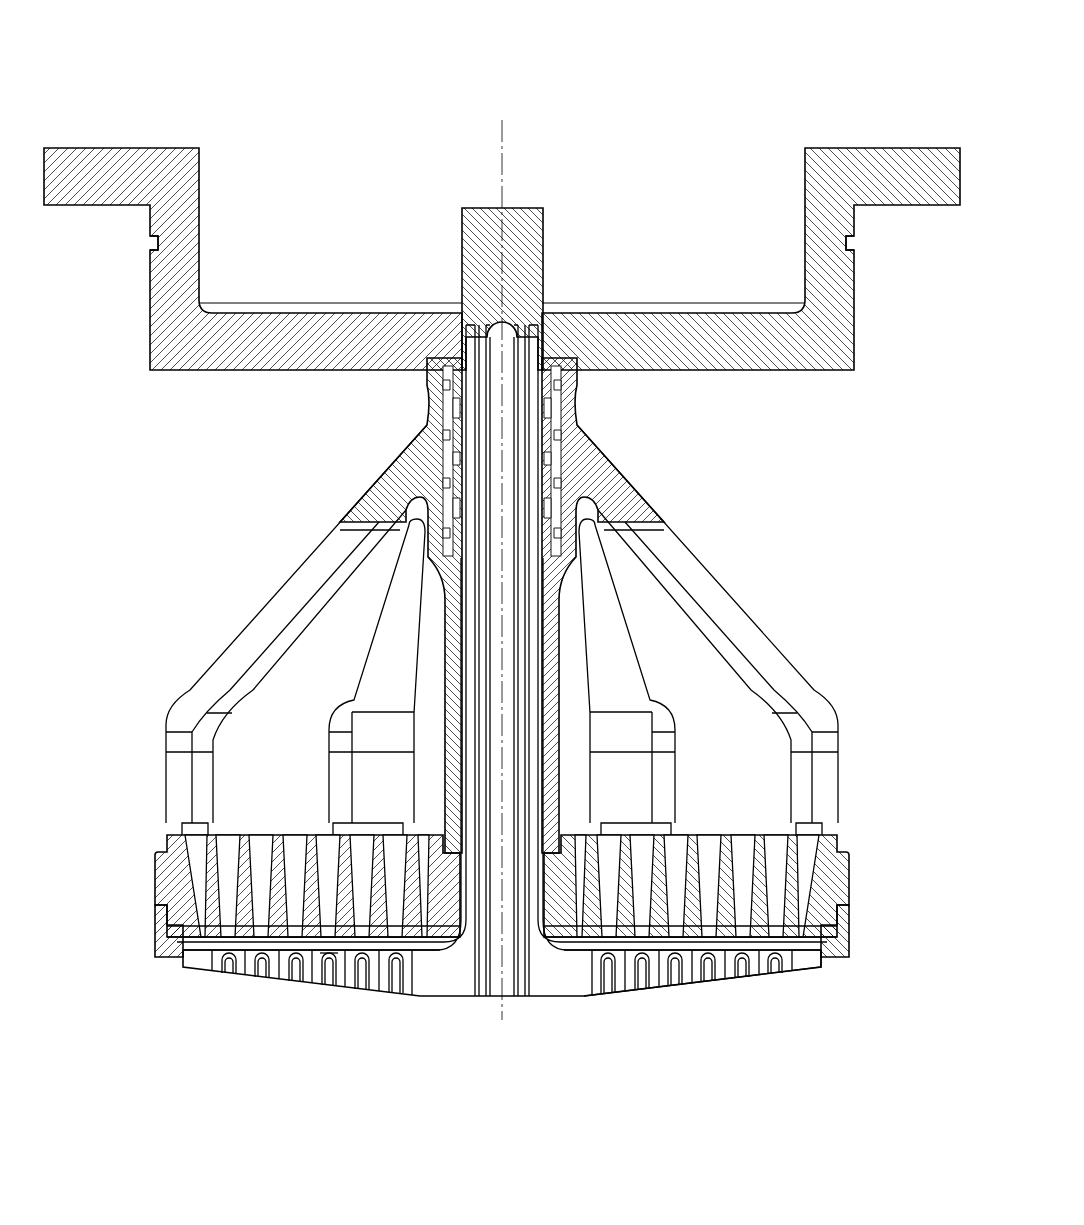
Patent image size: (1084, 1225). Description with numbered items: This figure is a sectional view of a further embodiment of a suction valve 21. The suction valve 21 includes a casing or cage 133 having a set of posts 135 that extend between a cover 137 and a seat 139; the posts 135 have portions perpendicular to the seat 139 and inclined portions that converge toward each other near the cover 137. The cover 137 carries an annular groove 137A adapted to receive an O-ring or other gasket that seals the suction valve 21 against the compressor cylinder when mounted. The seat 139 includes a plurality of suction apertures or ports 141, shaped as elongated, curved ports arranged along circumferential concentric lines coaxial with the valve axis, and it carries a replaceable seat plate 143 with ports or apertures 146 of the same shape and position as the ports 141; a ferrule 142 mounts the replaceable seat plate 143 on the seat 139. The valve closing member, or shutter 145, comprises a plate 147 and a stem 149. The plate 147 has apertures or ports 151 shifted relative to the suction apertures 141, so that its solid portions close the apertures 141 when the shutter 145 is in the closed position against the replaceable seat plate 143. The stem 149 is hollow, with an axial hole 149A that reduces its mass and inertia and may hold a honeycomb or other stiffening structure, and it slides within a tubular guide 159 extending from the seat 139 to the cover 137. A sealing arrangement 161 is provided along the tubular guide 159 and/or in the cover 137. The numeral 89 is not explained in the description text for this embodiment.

The suction valve 21 is at (288, 96).
The cover 137 is at (100, 165).
The annular groove 137A is at (143, 243).
The stem 149 is at (546, 260).
The hole 149A is at (478, 235).
The sealing arrangement 161 is at (445, 475).
The tubular guide 159 is at (565, 452).
The casing or cage 133 is at (290, 563).
The posts 135 is at (613, 647).
The suction apertures or ports 141 is at (300, 858).
The seat 139 is at (163, 846).
The ferrule 142 is at (160, 940).
The replaceable seat plate 143 is at (177, 940).
The valve closing member or shutter 145 is at (581, 1002).
The plate 147 is at (810, 985).
The ports or apertures 146 is at (263, 935).
The nozzle 89 is at (330, 960).
The apertures or ports 151 is at (385, 990).